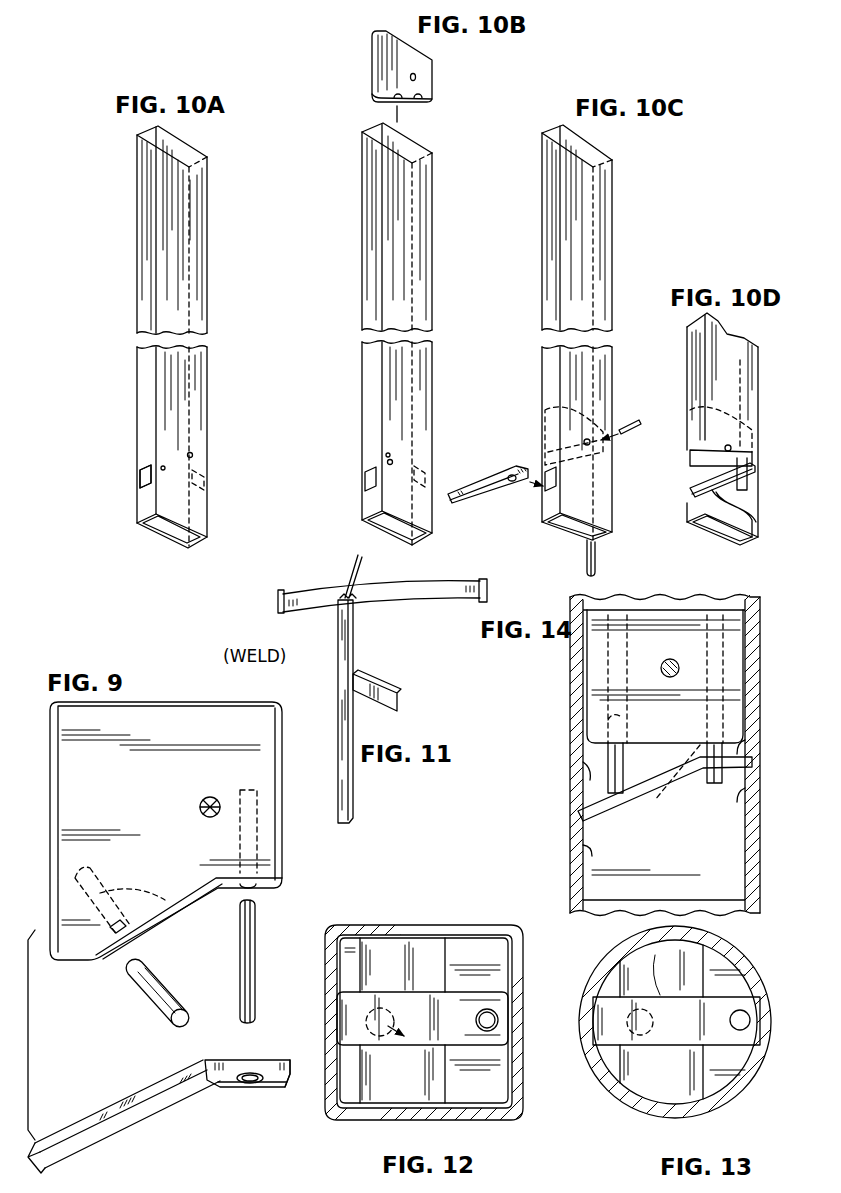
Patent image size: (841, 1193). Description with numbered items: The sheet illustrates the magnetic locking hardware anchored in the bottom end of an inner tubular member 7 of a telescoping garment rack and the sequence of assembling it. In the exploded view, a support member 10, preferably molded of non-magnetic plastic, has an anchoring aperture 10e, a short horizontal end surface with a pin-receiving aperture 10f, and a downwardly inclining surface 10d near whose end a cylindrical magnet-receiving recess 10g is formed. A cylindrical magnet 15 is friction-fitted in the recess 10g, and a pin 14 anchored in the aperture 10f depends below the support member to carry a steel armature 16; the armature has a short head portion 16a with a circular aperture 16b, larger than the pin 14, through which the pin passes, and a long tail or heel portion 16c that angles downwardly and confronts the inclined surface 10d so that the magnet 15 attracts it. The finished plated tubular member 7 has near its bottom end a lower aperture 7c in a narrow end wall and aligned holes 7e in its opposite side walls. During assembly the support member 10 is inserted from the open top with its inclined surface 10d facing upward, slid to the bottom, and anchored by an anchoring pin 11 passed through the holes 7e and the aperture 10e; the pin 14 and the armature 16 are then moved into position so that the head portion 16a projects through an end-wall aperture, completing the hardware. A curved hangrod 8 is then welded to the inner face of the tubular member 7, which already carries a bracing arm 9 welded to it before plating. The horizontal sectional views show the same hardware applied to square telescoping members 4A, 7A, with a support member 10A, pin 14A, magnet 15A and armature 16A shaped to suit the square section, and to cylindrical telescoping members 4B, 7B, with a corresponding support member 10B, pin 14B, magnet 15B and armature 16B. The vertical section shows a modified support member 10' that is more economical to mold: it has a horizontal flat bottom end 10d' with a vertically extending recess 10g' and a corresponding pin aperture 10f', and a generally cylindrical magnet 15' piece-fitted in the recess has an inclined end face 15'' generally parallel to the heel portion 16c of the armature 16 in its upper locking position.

In FIG. 10A, the inner tubular member 7 is at (212, 213).
In FIG. 10B, the inner tubular member 7 is at (437, 213).
In FIG. 10C, the inner tubular member 7 is at (617, 215).
In FIG. 10D, the inner tubular member 7 is at (760, 356).
In FIG. 11, the inner tubular member 7 is at (357, 641).
In FIG. 10A, the lower aperture 7c is at (137, 480).
In FIG. 10A, the aligned holes 7e is at (188, 452).
In FIG. 10B, the aligned holes 7e is at (405, 452).
In FIG. 11, the curved hangrod 8 is at (420, 584).
In FIG. 11, the bracing arm 9 is at (372, 686).
In FIG. 10B, the support member 10 is at (433, 66).
In FIG. 10C, the support member 10 is at (606, 416).
In FIG. 10D, the support member 10 is at (743, 431).
In FIG. 9, the support member 10 is at (166, 831).
In FIG. 9, the downwardly inclining surface 10d is at (132, 908).
In FIG. 9, the anchoring aperture 10e is at (200, 797).
In FIG. 9, the pin-receiving aperture 10f is at (283, 839).
In FIG. 9, the magnet-receiving recess 10g is at (162, 906).
In FIG. 10C, the anchoring pin 11 is at (633, 425).
In FIG. 10D, the anchoring pin 11 is at (732, 449).
In FIG. 10D, the pin 14 is at (746, 484).
In FIG. 9, the pin 14 is at (258, 932).
In FIG. 10D, the cylindrical magnet 15 is at (697, 477).
In FIG. 9, the cylindrical magnet 15 is at (140, 993).
In FIG. 10C, the armature member 16 is at (491, 489).
In FIG. 10D, the armature member 16 is at (752, 535).
In FIG. 9, the armature member 16 is at (135, 1128).
In FIG. 14, the armature member 16 is at (627, 817).
In FIG. 9, the head portion 16a is at (272, 1086).
In FIG. 9, the circular aperture 16b is at (250, 1084).
In FIG. 9, the tail portion 16c is at (62, 1146).
In FIG. 14, the modified support member 10' is at (665, 742).
In FIG. 14, the magnet-receiving recess 10g' is at (562, 679).
In FIG. 14, the horizontal flat bottom end 10d' is at (558, 768).
In FIG. 14, the bore 10f' is at (687, 721).
In FIG. 14, the cylindrical magnet 15' is at (558, 795).
In FIG. 14, the inclined end face 15'' is at (573, 826).
In FIG. 12, the post section 4A is at (384, 922).
In FIG. 12, the inner tubular member 7A is at (449, 930).
In FIG. 12, the support member 10A is at (491, 964).
In FIG. 12, the pin 14A is at (503, 1015).
In FIG. 12, the magnet 15A is at (383, 1036).
In FIG. 12, the armature 16A is at (482, 1052).
In FIG. 13, the post section 4B is at (705, 930).
In FIG. 13, the inner tubular member 7B is at (671, 1116).
In FIG. 13, the support member 10B is at (716, 970).
In FIG. 13, the pin 14B is at (753, 1022).
In FIG. 13, the magnet 15B is at (630, 1040).
In FIG. 13, the armature 16B is at (662, 939).